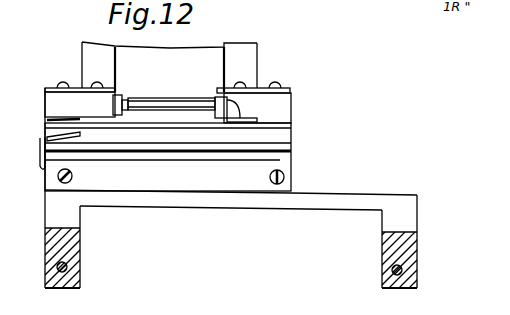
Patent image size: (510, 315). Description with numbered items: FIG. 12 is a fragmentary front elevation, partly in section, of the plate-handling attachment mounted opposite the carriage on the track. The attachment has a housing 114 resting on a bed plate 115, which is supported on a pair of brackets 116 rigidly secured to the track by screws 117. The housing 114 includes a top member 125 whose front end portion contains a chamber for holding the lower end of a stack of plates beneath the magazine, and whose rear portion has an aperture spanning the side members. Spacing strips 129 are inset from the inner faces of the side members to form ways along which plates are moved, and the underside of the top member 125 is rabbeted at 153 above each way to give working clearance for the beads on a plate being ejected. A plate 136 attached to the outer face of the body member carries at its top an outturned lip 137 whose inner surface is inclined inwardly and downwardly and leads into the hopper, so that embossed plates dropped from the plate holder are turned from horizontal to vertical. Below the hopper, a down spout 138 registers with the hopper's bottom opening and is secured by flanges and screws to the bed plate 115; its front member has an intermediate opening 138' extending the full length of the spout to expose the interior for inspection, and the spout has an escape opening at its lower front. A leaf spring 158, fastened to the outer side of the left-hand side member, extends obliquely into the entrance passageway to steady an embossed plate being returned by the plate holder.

The housing 114 is at (295, 124).
The bed plate 115 is at (343, 193).
The brackets 116 is at (72, 248).
The screws 117 is at (67, 265).
The top member 125 is at (58, 103).
The spacing strips 129 is at (49, 120).
The plate 136 is at (266, 168).
The lip 137 is at (217, 155).
The down spout 138 is at (169, 67).
The intermediate opening 138' is at (226, 43).
The rabbet 153 is at (218, 99).
The leaf spring 158 is at (41, 157).